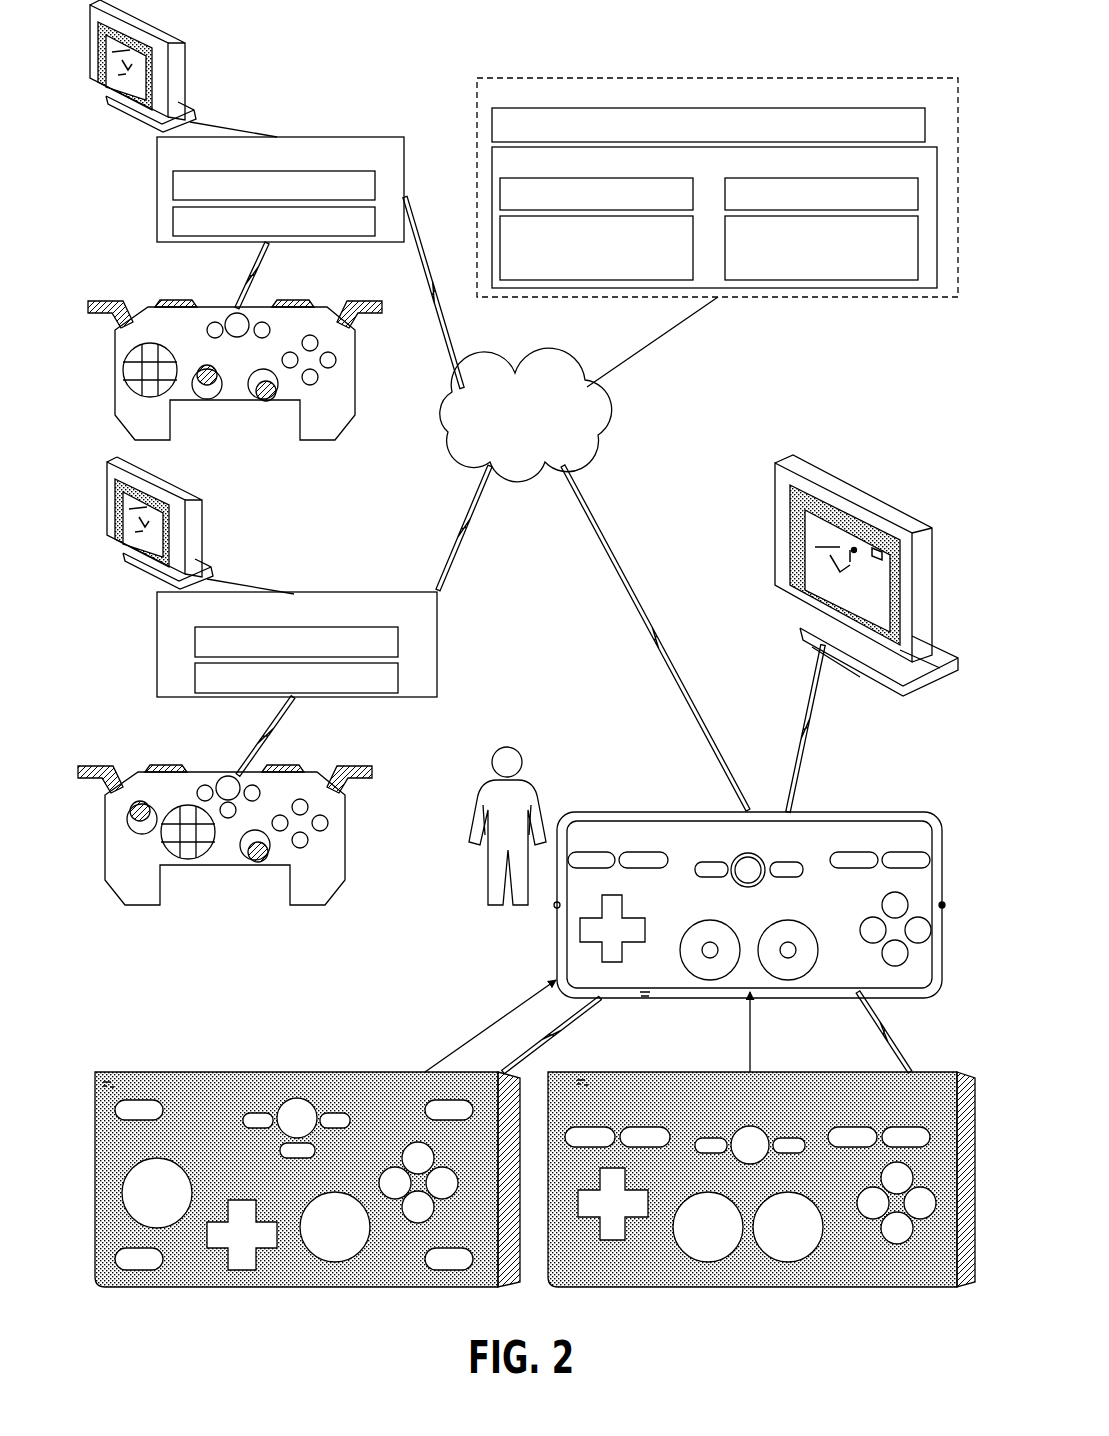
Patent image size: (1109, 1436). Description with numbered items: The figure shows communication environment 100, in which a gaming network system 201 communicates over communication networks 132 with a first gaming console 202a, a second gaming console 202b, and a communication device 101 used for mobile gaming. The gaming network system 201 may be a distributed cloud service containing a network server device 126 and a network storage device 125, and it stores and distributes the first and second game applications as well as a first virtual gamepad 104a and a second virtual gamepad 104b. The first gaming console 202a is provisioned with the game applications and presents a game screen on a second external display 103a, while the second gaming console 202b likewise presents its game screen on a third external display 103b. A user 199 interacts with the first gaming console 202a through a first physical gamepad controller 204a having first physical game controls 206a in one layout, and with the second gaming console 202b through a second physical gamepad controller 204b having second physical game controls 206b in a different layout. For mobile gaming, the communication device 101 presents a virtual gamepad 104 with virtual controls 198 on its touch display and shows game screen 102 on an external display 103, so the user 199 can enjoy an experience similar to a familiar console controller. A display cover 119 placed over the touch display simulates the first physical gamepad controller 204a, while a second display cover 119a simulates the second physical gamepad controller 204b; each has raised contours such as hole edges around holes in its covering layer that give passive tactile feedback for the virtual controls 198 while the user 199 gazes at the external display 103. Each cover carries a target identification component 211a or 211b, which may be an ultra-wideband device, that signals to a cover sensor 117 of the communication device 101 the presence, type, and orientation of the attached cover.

The communication environment 100 is at (313, 42).
The communication device 101 is at (612, 805).
The game screen 102 is at (828, 565).
The external display 103 is at (878, 497).
The second external display 103a is at (183, 80).
The third external display 103b is at (198, 548).
The first virtual gamepad 104 is at (887, 817).
The first virtual gamepad 104a is at (596, 248).
The second virtual gamepad 104b is at (821, 248).
The cover sensor 117 is at (645, 999).
The display cover 119 is at (853, 1288).
The second display cover 119a is at (298, 1288).
The network storage device 125 is at (714, 217).
The network server device 126 is at (708, 125).
The communication networks 132 is at (526, 415).
The virtual controls 198 is at (803, 848).
The user 199 is at (485, 902).
The gaming network system 201 is at (717, 187).
The first gaming console 202a is at (280, 189).
The second gaming console 202b is at (297, 644).
The first physical gamepad controller 204a is at (337, 440).
The second physical gamepad controller 204b is at (340, 893).
The first physical game controls 206a is at (317, 402).
The second physical game controls 206b is at (317, 857).
The target identification component 211a is at (582, 1078).
The target identification component 211b is at (112, 1080).